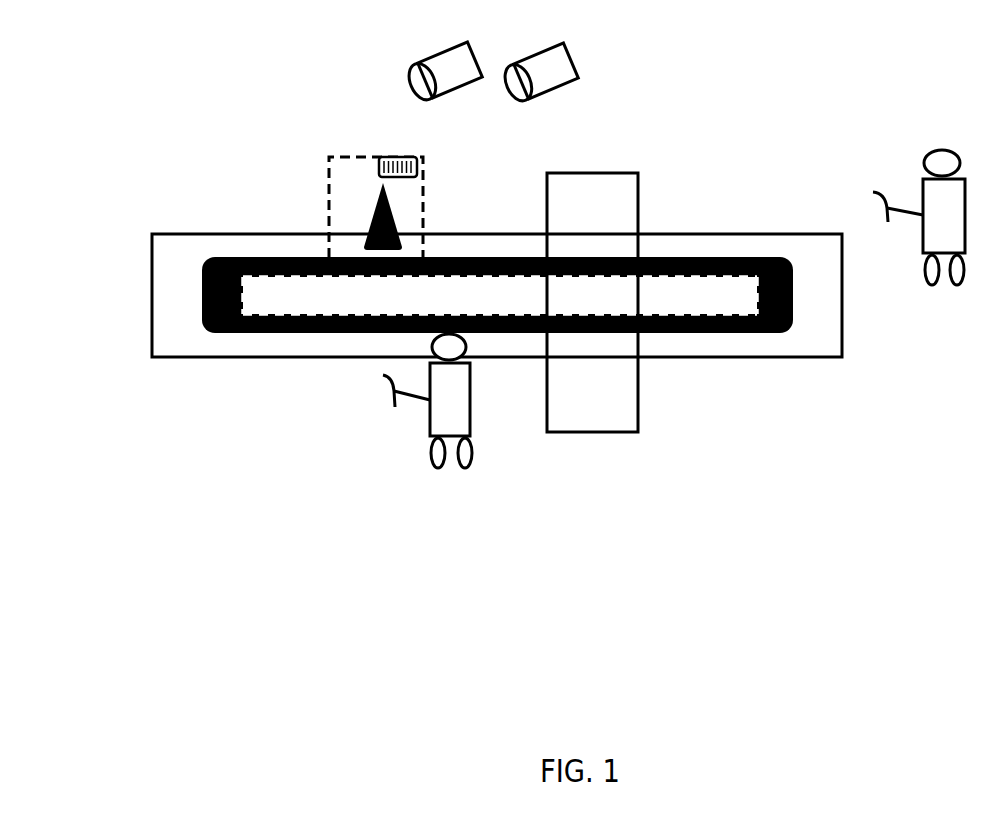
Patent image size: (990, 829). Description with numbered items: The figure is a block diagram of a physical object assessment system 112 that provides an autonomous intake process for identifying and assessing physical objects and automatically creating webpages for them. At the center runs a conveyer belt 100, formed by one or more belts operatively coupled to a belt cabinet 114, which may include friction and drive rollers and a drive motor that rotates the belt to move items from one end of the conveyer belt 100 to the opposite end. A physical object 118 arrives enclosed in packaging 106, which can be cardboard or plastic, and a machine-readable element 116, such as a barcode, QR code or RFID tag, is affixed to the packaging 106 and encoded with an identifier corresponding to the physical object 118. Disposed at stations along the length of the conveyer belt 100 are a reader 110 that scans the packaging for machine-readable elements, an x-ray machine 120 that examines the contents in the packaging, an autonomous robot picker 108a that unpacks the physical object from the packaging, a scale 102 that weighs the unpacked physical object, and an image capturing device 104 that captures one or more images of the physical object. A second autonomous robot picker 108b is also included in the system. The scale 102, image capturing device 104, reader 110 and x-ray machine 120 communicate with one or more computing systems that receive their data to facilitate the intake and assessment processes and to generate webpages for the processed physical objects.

The conveyer belt 100 is at (756, 332).
The scale 102 is at (662, 296).
The image capturing device 104 is at (578, 80).
The packaging 106 is at (425, 205).
The autonomous robot picker 108a is at (425, 430).
The autonomous robot picker 108b is at (918, 247).
The reader 110 is at (440, 53).
The physical object assessment system 112 is at (857, 105).
The belt cabinet 114 is at (198, 337).
The machine-readable element 116 is at (397, 155).
The physical object 118 is at (372, 215).
The x-ray machine 120 is at (638, 215).